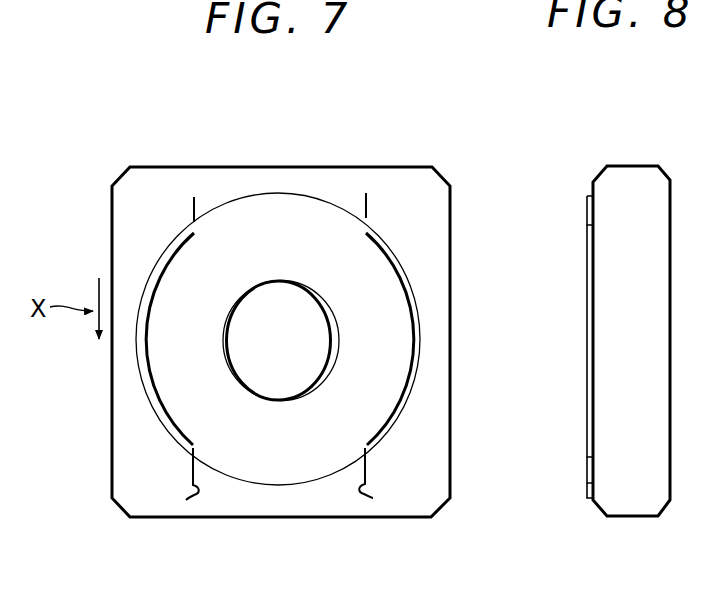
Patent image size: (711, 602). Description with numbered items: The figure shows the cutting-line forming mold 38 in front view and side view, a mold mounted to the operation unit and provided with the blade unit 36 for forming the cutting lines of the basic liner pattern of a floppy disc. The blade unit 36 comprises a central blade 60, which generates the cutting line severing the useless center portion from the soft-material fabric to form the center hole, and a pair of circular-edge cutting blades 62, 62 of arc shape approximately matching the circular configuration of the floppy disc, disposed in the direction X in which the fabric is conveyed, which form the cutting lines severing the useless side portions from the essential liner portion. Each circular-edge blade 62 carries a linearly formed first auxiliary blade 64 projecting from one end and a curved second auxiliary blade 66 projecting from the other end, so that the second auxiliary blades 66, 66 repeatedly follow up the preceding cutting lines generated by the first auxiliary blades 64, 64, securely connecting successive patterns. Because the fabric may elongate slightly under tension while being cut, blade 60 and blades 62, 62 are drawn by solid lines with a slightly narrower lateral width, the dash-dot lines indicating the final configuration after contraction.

In FIG. 7, the blade 36 is at (371, 207).
In FIG. 7, the cutting-line forming mold 38 is at (117, 159).
In FIG. 8, the cutting-line forming mold 38 is at (597, 160).
In FIG. 7, the blade 60 is at (240, 292).
In FIG. 8, the blade 60 is at (591, 306).
In FIG. 7, the circular-edge cutting blade 62 is at (145, 372).
In FIG. 8, the circular-edge cutting blade 62 is at (586, 415).
In FIG. 7, the first auxiliary blade 64 is at (190, 213).
In FIG. 8, the first auxiliary blade 64 is at (585, 200).
In FIG. 7, the second auxiliary blade 66 is at (206, 503).
In FIG. 8, the second auxiliary blade 66 is at (586, 495).